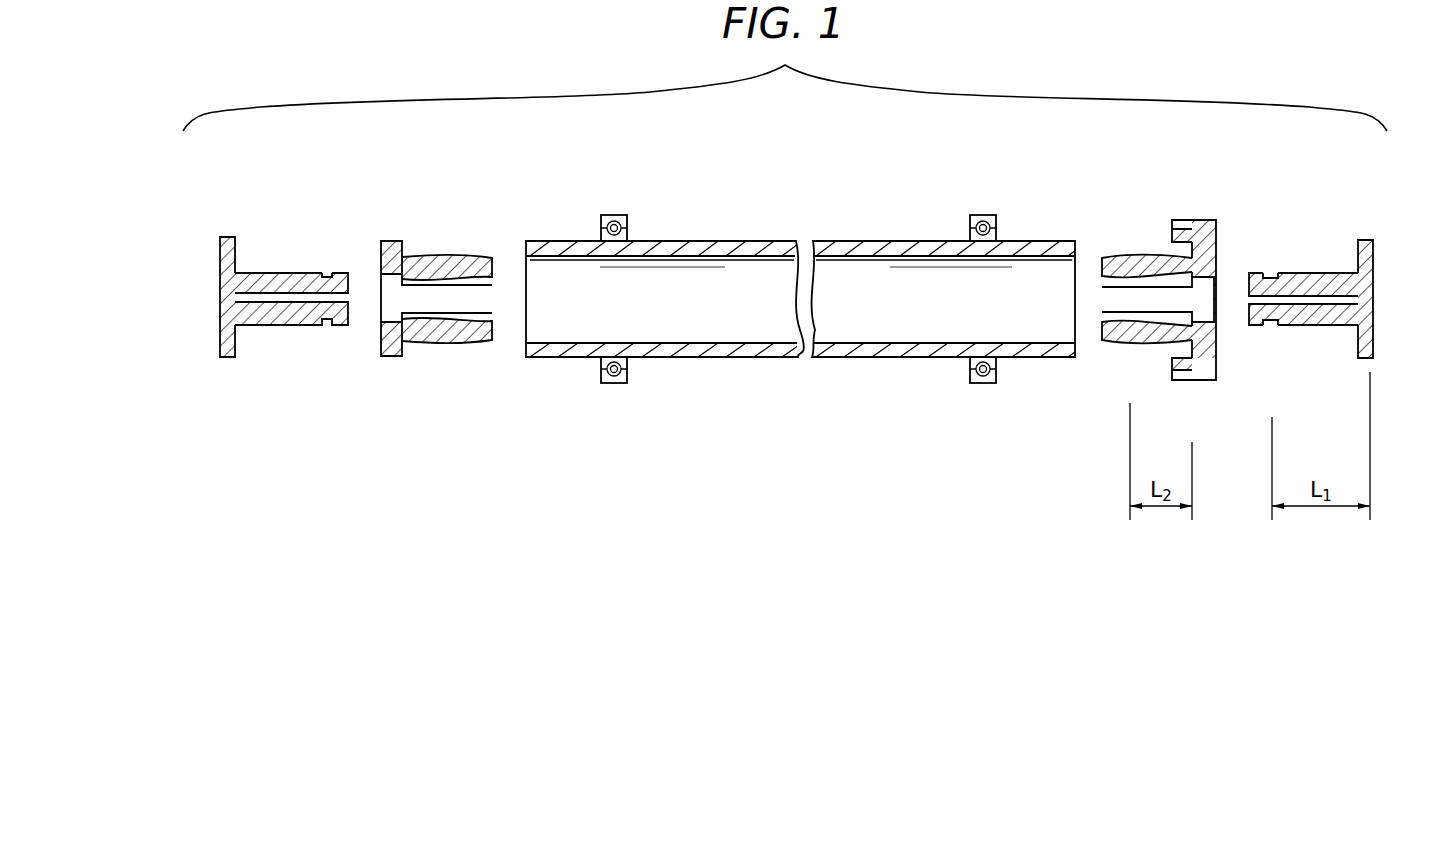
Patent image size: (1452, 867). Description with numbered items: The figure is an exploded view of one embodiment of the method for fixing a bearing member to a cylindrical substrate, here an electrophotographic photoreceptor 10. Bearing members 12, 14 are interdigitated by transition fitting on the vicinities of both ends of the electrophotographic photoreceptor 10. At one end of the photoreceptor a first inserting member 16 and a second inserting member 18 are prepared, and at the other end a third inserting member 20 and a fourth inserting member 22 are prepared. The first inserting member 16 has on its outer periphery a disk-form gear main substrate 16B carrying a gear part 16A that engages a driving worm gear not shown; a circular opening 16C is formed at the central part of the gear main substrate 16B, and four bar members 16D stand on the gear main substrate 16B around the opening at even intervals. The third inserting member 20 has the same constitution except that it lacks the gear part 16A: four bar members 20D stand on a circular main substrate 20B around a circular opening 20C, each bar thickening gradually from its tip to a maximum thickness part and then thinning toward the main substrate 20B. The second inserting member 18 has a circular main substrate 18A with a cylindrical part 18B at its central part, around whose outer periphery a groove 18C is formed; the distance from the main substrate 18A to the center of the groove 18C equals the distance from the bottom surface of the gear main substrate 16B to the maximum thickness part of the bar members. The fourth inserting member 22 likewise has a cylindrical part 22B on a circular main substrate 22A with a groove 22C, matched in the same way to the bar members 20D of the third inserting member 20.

The electrophotographic photoreceptor 10 is at (807, 276).
The bearing member 12 is at (983, 215).
The bearing member 14 is at (614, 215).
The first inserting member 16 is at (1194, 291).
The gear part 16A is at (1195, 220).
The gear main substrate 16B is at (1218, 237).
The circular opening 16C is at (1212, 300).
The bar members 16D is at (1122, 258).
The second inserting member 18 is at (1347, 285).
The circular main substrate 18A is at (1374, 268).
The cylindrical part 18B is at (1327, 326).
The groove 18C is at (1272, 326).
The third inserting member 20 is at (420, 281).
The circular main substrate 20B is at (386, 241).
The circular opening 20C is at (385, 308).
The bar members 20D is at (478, 257).
The fourth inserting member 22 is at (251, 279).
The circular main substrate 22A is at (220, 271).
The cylindrical part 22B is at (288, 326).
The groove 22C is at (323, 272).